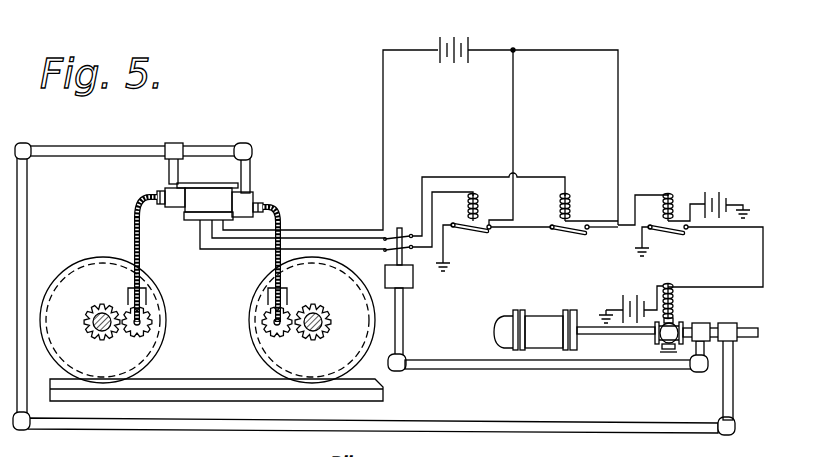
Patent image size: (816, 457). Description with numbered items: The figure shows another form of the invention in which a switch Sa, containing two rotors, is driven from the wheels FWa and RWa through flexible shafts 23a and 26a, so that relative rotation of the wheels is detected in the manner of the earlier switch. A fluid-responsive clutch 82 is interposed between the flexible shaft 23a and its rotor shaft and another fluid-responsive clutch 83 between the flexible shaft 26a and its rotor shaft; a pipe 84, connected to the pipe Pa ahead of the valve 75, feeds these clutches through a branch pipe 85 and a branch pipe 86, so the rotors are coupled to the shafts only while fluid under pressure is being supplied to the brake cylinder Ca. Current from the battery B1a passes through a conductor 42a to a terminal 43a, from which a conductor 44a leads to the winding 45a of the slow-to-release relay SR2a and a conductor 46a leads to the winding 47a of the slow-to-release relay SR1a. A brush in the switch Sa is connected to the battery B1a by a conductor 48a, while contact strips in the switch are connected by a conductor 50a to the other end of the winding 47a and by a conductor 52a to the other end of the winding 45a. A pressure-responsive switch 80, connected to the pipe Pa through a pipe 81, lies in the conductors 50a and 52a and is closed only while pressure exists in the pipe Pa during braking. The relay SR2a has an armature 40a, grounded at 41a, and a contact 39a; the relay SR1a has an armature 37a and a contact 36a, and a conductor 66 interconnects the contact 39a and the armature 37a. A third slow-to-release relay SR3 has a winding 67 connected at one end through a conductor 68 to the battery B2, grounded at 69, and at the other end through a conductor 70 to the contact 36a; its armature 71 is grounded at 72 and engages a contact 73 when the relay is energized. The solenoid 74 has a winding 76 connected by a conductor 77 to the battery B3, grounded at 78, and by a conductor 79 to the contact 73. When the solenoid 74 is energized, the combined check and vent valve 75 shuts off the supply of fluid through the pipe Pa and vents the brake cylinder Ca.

The branch pipe 85 is at (168, 170).
The switch Sa is at (212, 184).
The branch pipe 86 is at (252, 170).
The fluid-responsive clutch 83 is at (246, 205).
The flexible shaft 23a is at (135, 216).
The fluid-responsive clutch 82 is at (178, 201).
The flexible shaft 26a is at (283, 218).
The conductor 50a is at (340, 229).
The conductor 52a is at (380, 247).
The wheel FWa is at (97, 257).
The wheel RWa is at (262, 280).
The switch 80 is at (413, 280).
The battery B1a is at (465, 25).
The conductor 42a is at (491, 50).
The terminal 43a is at (515, 54).
The conductor 44a is at (512, 120).
The conductor 48a is at (382, 136).
The conductor 46a is at (619, 108).
The slow-to-release relay SR2a is at (473, 188).
The winding 45a is at (478, 194).
The slow-to-release relay SR1a is at (576, 190).
The winding 47a is at (572, 200).
The contact 39a is at (492, 225).
The contact 36a is at (588, 224).
The armature 40a is at (478, 233).
The conductor 66 is at (520, 239).
The armature 37a is at (575, 235).
The ground 41a is at (450, 268).
The conductor 70 is at (646, 194).
The slow-to-release relay SR3 is at (672, 192).
The winding 67 is at (675, 198).
The battery B2 is at (727, 192).
The ground 69 is at (760, 196).
The conductor 68 is at (693, 212).
The ground 72 is at (642, 245).
The armature 71 is at (670, 236).
The contact 73 is at (689, 232).
The conductor 79 is at (763, 264).
The conductor 77 is at (657, 290).
The solenoid 74 is at (672, 284).
The winding 76 is at (675, 303).
The battery B3 is at (624, 294).
The brake cylinder Ca is at (545, 318).
The ground 78 is at (603, 312).
The pipe Pa is at (617, 334).
The combined check and vent valve 75 is at (656, 343).
The pipe 81 is at (566, 369).
The pipe 84 is at (612, 423).